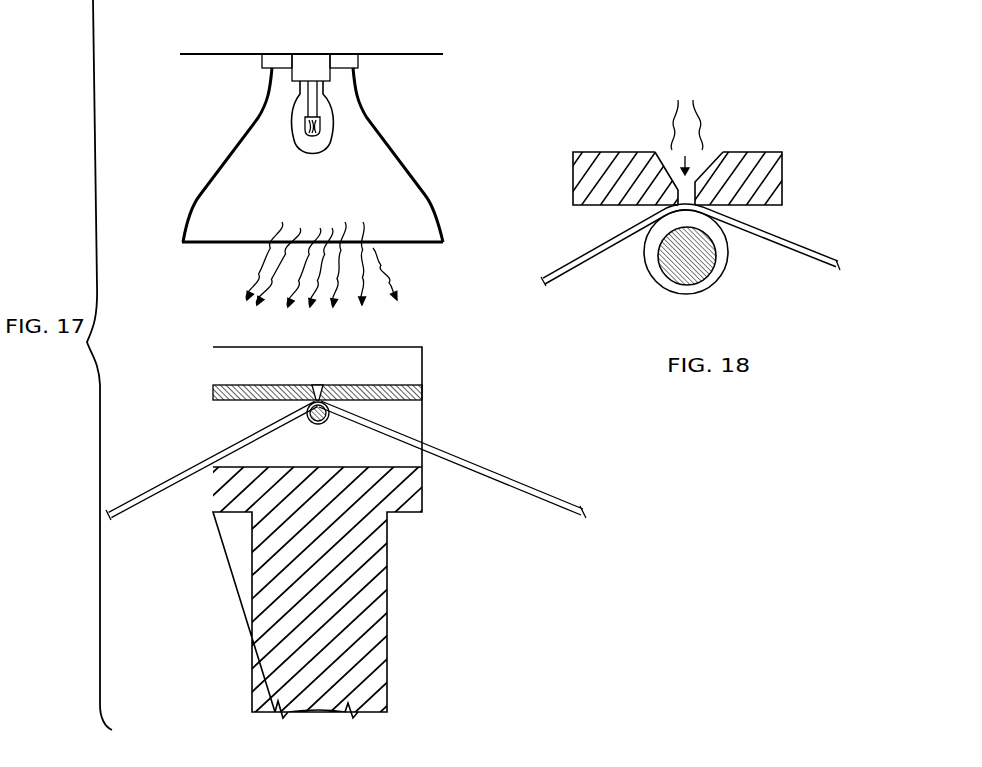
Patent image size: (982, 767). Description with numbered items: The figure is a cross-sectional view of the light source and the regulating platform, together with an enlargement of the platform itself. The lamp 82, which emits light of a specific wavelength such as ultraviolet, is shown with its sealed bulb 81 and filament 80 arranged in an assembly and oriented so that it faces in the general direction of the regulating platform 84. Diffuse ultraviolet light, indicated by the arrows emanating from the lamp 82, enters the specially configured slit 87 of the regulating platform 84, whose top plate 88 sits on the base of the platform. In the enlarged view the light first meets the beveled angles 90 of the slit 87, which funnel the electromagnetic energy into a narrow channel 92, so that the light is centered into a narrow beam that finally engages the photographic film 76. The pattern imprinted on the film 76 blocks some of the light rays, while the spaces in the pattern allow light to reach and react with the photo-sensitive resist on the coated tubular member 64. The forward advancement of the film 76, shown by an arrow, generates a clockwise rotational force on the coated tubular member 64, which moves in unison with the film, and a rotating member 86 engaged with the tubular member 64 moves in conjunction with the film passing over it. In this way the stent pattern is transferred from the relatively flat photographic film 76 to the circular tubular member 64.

In FIG. 17, the coated tubular member 64 is at (333, 419).
In FIG. 18, the coated tubular member 64 is at (663, 285).
In FIG. 17, the photographic film 76 is at (171, 479).
In FIG. 18, the photographic film 76 is at (580, 268).
In FIG. 17, the filament 80 is at (291, 128).
In FIG. 17, the sealed bulb 81 is at (333, 130).
In FIG. 17, the lamp 82 is at (400, 180).
In FIG. 17, the regulating platform 84 is at (405, 361).
In FIG. 18, the regulating platform 84 is at (782, 166).
In FIG. 17, the rotating member 86 is at (308, 436).
In FIG. 18, the rotating member 86 is at (708, 276).
In FIG. 17, the slit 87 is at (318, 383).
In FIG. 18, the slit 87 is at (705, 148).
In FIG. 17, the top plate 88 is at (234, 385).
In FIG. 18, the beveled angles 90 is at (665, 152).
In FIG. 18, the narrow channel 92 is at (677, 207).